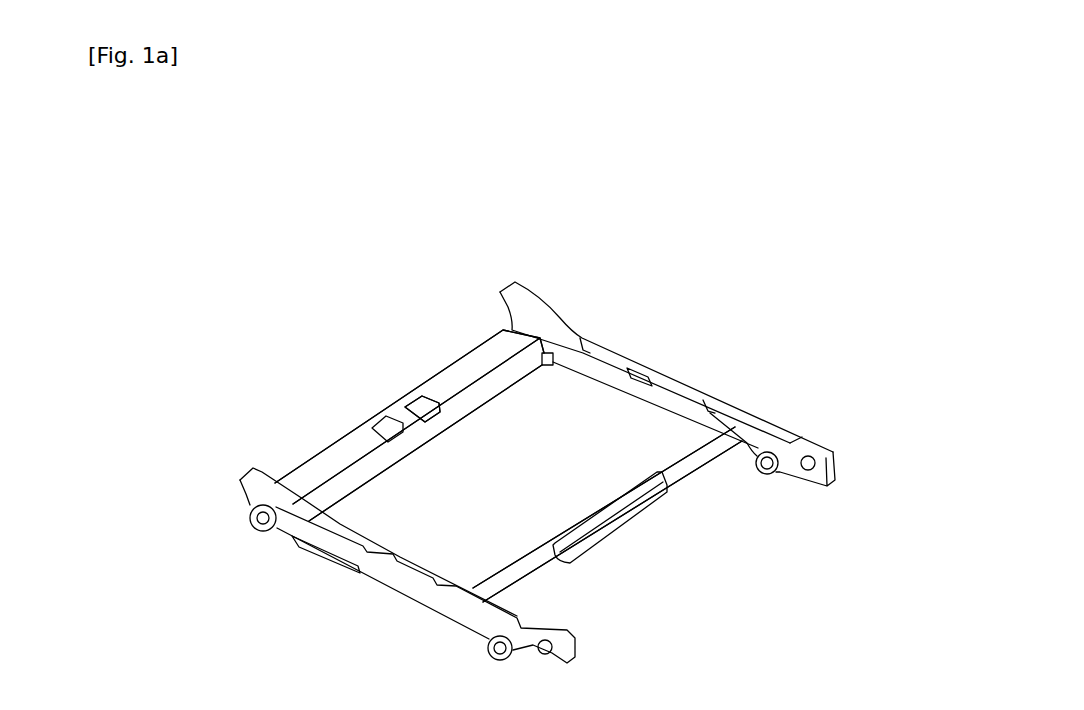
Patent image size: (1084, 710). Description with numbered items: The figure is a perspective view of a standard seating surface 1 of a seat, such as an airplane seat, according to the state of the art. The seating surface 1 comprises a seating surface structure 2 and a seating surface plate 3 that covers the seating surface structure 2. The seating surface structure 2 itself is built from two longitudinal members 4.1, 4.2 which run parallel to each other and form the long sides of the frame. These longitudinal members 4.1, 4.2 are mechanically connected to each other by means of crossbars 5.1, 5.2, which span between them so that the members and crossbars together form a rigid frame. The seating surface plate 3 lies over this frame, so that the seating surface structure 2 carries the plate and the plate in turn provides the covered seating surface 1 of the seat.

The seating surface 1 is at (438, 232).
The seating surface structure 2 is at (615, 324).
The seating surface plate 3 is at (465, 457).
The longitudinal member 4.1 is at (738, 420).
The longitudinal member 4.2 is at (362, 571).
The crossbar 5.1 is at (450, 378).
The crossbar 5.2 is at (537, 572).